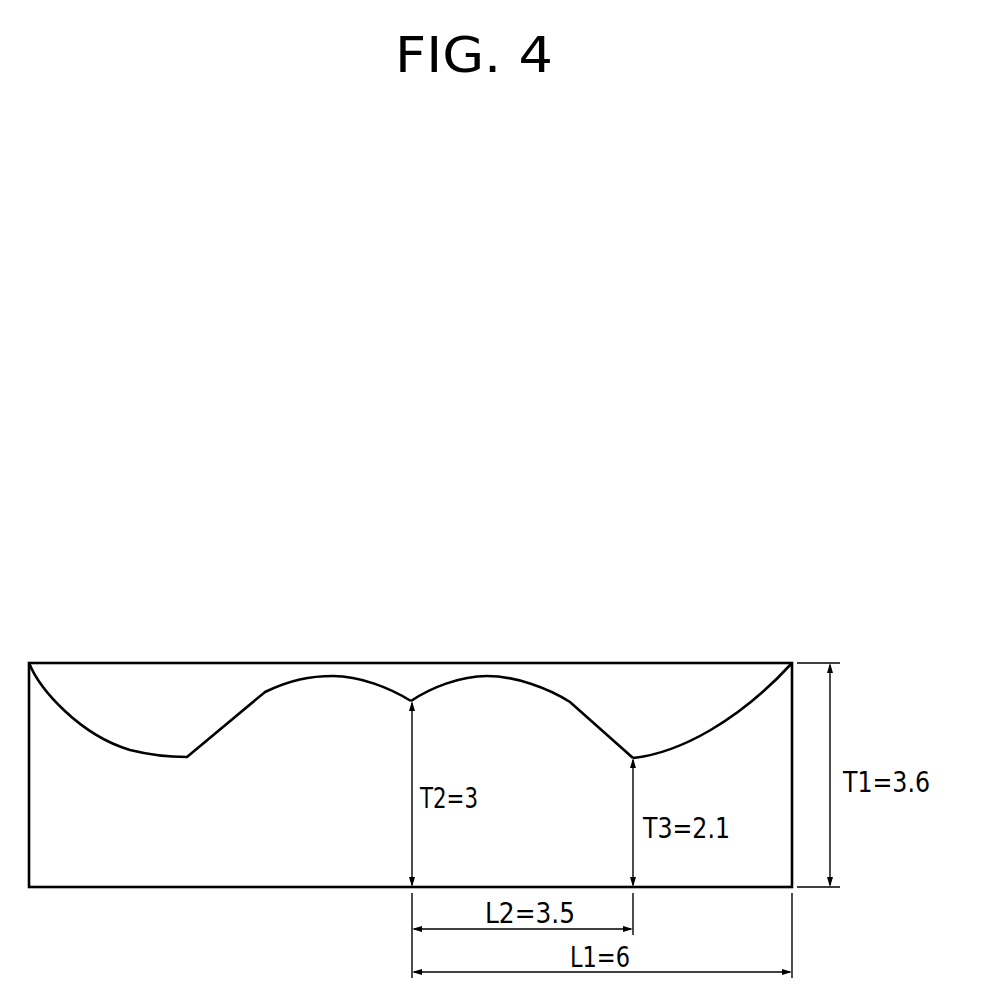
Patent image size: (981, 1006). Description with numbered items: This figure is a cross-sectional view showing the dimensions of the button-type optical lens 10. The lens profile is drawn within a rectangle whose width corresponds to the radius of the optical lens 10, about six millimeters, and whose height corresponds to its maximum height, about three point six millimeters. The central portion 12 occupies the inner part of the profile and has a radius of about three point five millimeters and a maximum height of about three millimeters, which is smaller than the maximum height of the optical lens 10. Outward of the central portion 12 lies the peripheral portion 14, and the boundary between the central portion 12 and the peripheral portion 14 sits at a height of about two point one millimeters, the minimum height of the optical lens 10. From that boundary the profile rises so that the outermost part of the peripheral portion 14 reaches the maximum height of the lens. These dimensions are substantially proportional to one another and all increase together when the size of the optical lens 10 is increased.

The optical lens 10 is at (397, 417).
The central portion 12 is at (484, 720).
The peripheral portion 14 is at (773, 720).